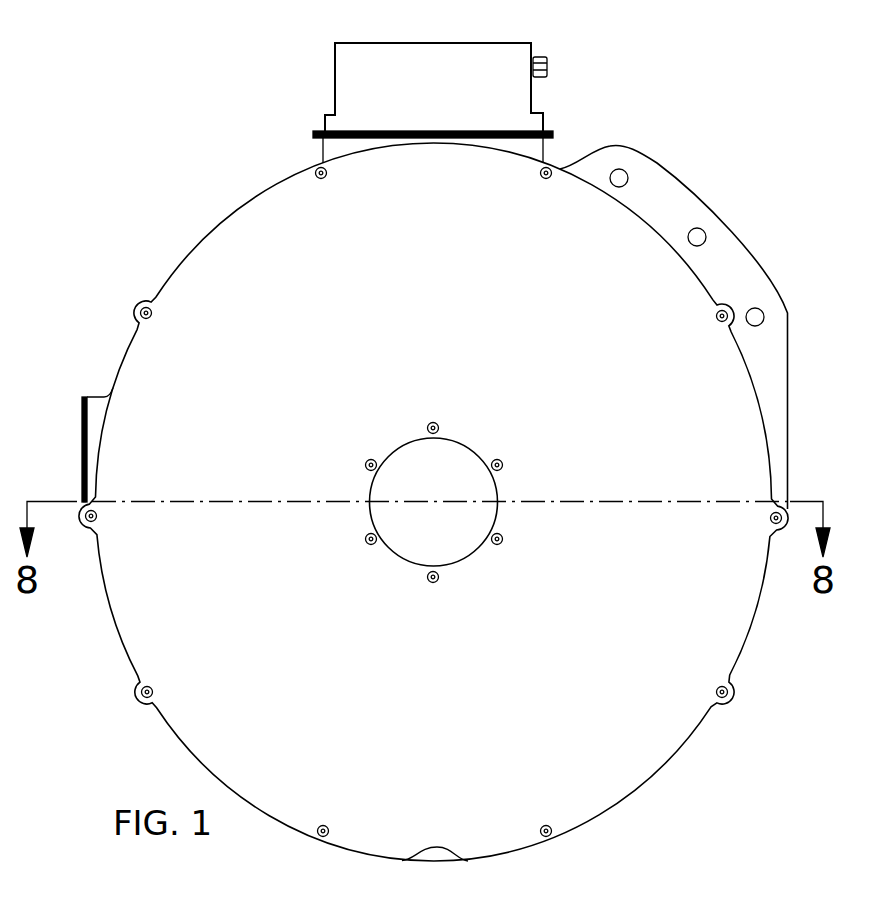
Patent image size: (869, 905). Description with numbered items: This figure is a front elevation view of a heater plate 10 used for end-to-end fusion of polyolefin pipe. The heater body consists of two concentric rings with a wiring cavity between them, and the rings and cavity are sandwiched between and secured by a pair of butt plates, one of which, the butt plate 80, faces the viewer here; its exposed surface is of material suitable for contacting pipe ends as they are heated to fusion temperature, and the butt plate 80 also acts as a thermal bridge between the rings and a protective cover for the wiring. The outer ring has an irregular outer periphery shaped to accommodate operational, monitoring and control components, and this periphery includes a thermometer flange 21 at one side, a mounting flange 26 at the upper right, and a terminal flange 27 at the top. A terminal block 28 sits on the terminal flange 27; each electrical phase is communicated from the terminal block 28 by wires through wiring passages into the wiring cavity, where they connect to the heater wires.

The heater plate 10 is at (674, 99).
The thermometer flange 21 is at (96, 434).
The mounting flange 26 is at (683, 200).
The terminal flange 27 is at (322, 147).
The terminal block 28 is at (352, 75).
The butt plate 80 is at (135, 580).